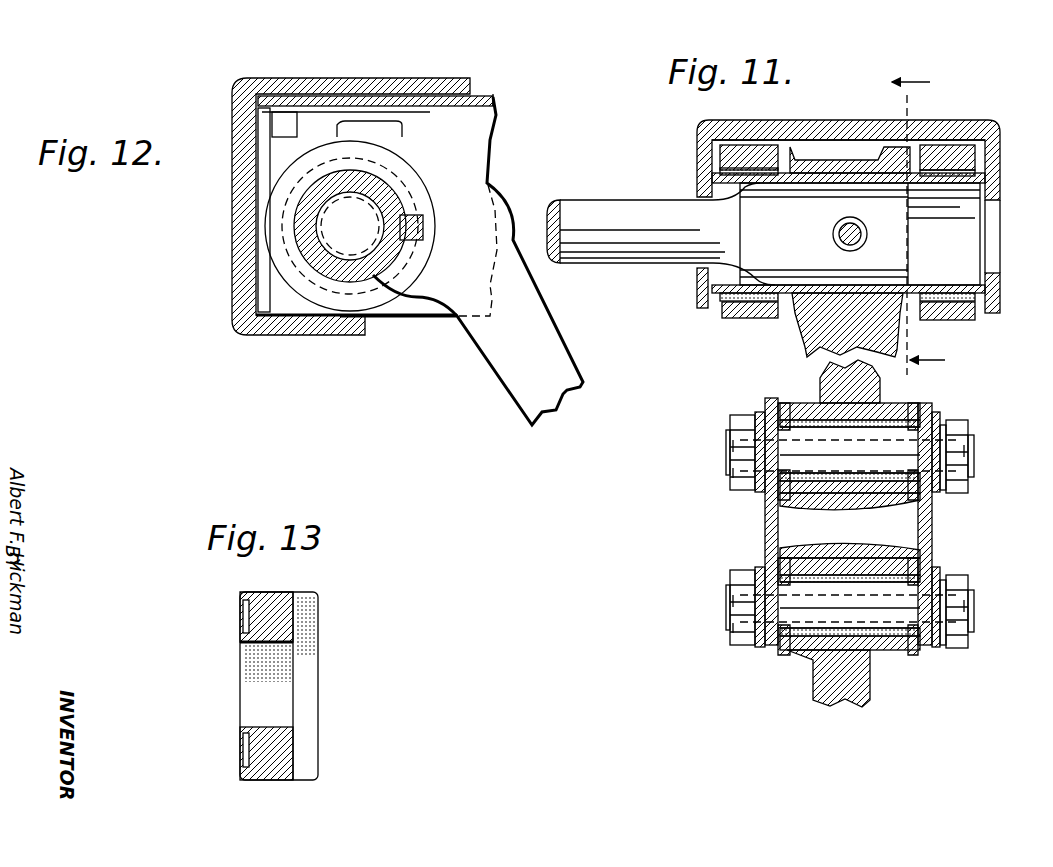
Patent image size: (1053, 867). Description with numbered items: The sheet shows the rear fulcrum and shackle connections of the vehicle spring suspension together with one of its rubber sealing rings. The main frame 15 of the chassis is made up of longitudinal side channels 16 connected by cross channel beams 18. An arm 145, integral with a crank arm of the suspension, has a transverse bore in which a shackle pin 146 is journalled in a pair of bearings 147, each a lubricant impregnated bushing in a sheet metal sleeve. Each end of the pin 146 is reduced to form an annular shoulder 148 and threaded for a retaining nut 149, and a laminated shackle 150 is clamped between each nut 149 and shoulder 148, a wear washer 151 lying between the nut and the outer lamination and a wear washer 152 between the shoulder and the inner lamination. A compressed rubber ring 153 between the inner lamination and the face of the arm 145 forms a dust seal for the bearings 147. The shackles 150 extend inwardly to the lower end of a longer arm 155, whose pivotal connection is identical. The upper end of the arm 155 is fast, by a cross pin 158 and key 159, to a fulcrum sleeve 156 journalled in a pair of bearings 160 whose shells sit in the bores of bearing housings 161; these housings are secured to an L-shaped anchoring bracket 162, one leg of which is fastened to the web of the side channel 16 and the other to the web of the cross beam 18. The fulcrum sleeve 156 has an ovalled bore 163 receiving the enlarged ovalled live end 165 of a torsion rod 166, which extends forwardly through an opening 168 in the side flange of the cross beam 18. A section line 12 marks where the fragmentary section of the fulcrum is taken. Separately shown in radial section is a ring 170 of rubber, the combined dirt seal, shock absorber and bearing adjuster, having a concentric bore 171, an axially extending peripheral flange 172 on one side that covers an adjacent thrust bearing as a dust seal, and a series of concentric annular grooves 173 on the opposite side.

In FIG. 11, the section line 12— 12 is at (934, 213).
In FIG. 11, the main frame 15 is at (761, 122).
In FIG. 12, the main frame 15 is at (499, 98).
In FIG. 12, the longitudinal channel beam 16 is at (248, 338).
In FIG. 11, the cross channel beam 18 is at (700, 121).
In FIG. 12, the cross channel beam 18 is at (468, 97).
In FIG. 11, the arm 145 is at (847, 703).
In FIG. 11, the shackle pin 146 is at (968, 456).
In FIG. 11, the bearing 147 is at (862, 490).
In FIG. 11, the annular shoulder 148 is at (742, 443).
In FIG. 11, the retaining nut 149 is at (953, 492).
In FIG. 11, the laminated shackle 150 is at (763, 538).
In FIG. 11, the wear washer 151 is at (762, 493).
In FIG. 11, the wear washer 152 is at (913, 503).
In FIG. 11, the ring 153 is at (780, 495).
In FIG. 11, the arm 155 is at (822, 376).
In FIG. 11, the fulcrum sleeve 156 is at (860, 234).
In FIG. 12, the fulcrum sleeve 156 is at (342, 262).
In FIG. 11, the cross pin 158 is at (832, 237).
In FIG. 12, the key 159 is at (420, 218).
In FIG. 11, the bearing 160 is at (730, 317).
In FIG. 11, the bearing housing 161 is at (943, 150).
In FIG. 12, the bearing housing 161 is at (263, 297).
In FIG. 11, the anchoring bracket 162 is at (830, 140).
In FIG. 12, the anchoring bracket 162 is at (254, 252).
In FIG. 11, the ovalled bore 163 is at (943, 297).
In FIG. 12, the ovalled bore 163 is at (395, 262).
In FIG. 11, the live end 165 is at (850, 252).
In FIG. 12, the live end 165 is at (360, 268).
In FIG. 11, the torsion rod 166 is at (607, 207).
In FIG. 12, the torsion rod 166 is at (372, 192).
In FIG. 11, the opening 168 is at (695, 273).
In FIG. 13, the ring 170 is at (238, 685).
In FIG. 13, the concentric bore 171 is at (285, 687).
In FIG. 13, the peripheral flange 172 is at (313, 592).
In FIG. 13, the annular grooves 173 is at (250, 750).